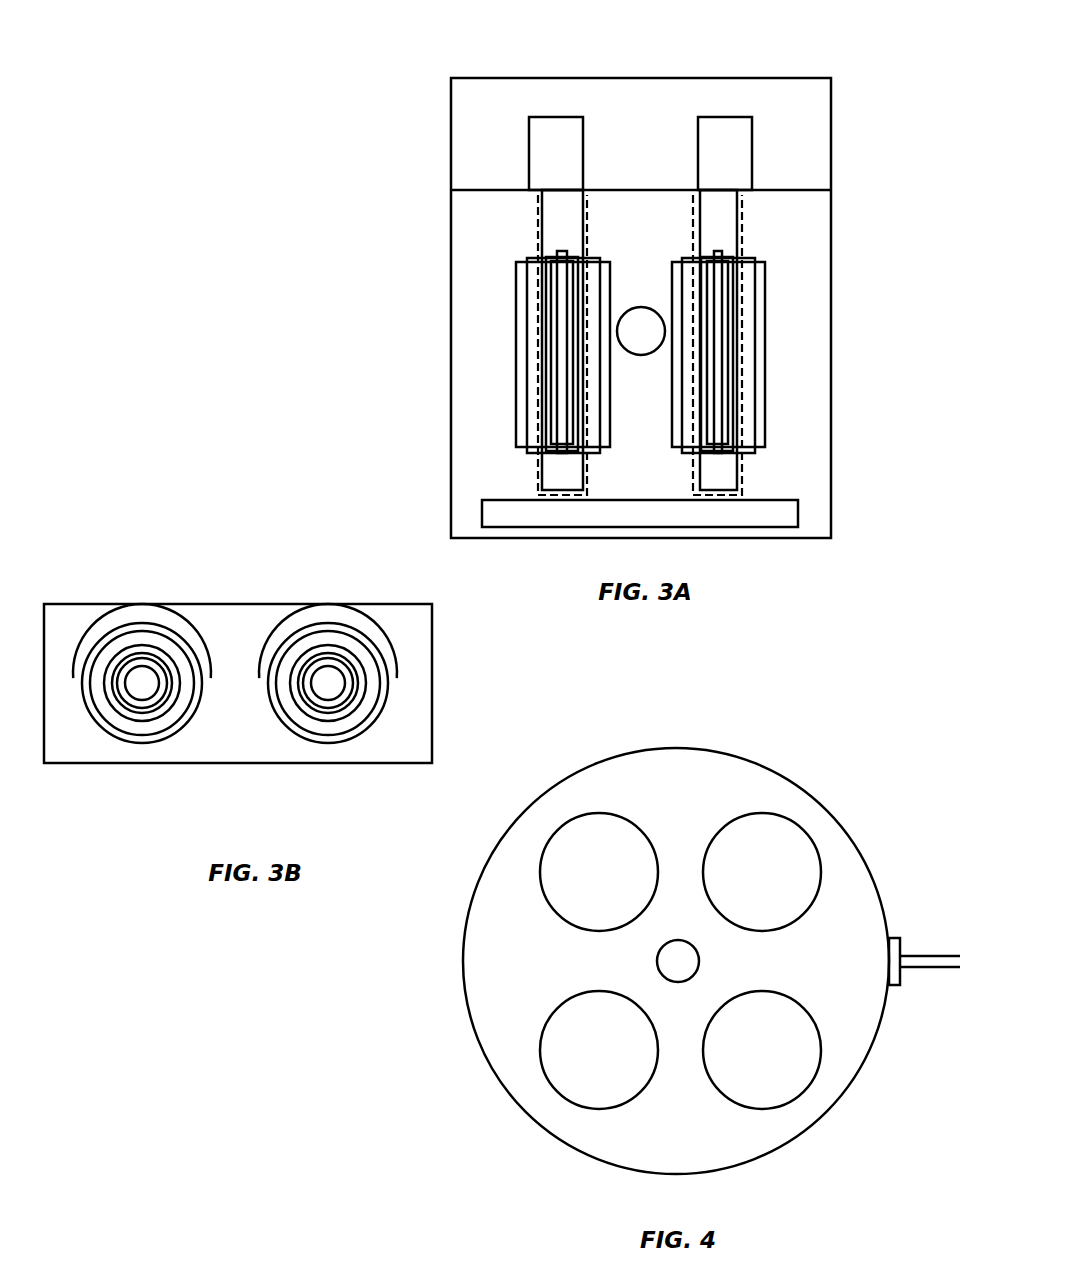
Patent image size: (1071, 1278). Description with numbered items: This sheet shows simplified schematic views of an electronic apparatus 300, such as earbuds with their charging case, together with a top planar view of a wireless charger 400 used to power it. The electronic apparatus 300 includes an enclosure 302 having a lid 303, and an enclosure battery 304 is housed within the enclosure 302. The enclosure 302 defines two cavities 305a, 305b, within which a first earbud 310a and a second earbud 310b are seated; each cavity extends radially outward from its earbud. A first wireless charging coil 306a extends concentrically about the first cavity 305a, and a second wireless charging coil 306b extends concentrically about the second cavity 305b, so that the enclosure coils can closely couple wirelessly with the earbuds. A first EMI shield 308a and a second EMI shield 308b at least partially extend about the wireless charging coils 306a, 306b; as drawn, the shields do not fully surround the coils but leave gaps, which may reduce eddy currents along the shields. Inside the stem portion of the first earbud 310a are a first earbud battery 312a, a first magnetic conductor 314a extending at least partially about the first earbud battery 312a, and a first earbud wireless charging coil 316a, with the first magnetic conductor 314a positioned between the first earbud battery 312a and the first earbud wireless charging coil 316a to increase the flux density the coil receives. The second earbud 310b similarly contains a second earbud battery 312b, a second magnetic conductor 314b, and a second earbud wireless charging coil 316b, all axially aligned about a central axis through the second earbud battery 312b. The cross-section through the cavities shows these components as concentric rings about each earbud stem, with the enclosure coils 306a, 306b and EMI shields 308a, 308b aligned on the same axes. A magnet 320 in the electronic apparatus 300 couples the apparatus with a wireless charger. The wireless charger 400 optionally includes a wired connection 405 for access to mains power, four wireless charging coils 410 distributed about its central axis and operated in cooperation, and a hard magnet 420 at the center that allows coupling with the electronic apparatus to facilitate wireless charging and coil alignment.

In FIG. 3A, the electronic apparatus 300 is at (350, 74).
In FIG. 3A, the enclosure 302 is at (832, 483).
In FIG. 3B, the enclosure 302 is at (433, 650).
In FIG. 3A, the lid 303 is at (450, 122).
In FIG. 3A, the enclosure battery 304 is at (482, 512).
In FIG. 3A, the first cavity 305a is at (537, 200).
In FIG. 3B, the first cavity 305a is at (183, 640).
In FIG. 3A, the second cavity 305b is at (743, 207).
In FIG. 3B, the second cavity 305b is at (369, 640).
In FIG. 3A, the first wireless charging coil 306a is at (527, 312).
In FIG. 3B, the first wireless charging coil 306a is at (147, 623).
In FIG. 3A, the second wireless charging coil 306b is at (755, 315).
In FIG. 3B, the second wireless charging coil 306b is at (333, 623).
In FIG. 3A, the first EMI shield 308a is at (517, 278).
In FIG. 3B, the first EMI shield 308a is at (102, 625).
In FIG. 3A, the second EMI shield 308b is at (765, 282).
In FIG. 3B, the second EMI shield 308b is at (288, 625).
In FIG. 3A, the first earbud 310a is at (560, 117).
In FIG. 3B, the first earbud 310a is at (175, 693).
In FIG. 3A, the second earbud 310b is at (727, 117).
In FIG. 3B, the second earbud 310b is at (361, 693).
In FIG. 3A, the first earbud battery 312a is at (558, 423).
In FIG. 3B, the first earbud battery 312a is at (122, 710).
In FIG. 3A, the second earbud battery 312b is at (720, 425).
In FIG. 3B, the second earbud battery 312b is at (308, 710).
In FIG. 3A, the first magnetic conductor 314a is at (552, 387).
In FIG. 3B, the first magnetic conductor 314a is at (150, 712).
In FIG. 3A, the second magnetic conductor 314b is at (728, 390).
In FIG. 3B, the second magnetic conductor 314b is at (336, 712).
In FIG. 3A, the first earbud wireless charging coil 316a is at (547, 352).
In FIG. 3B, the first earbud wireless charging coil 316a is at (158, 722).
In FIG. 3A, the second earbud wireless charging coil 316b is at (735, 357).
In FIG. 3B, the second earbud wireless charging coil 316b is at (344, 722).
In FIG. 3A, the magnet 320 is at (630, 310).
In FIG. 4, the wireless charger 400 is at (674, 726).
In FIG. 4, the wired connection 405 is at (895, 938).
In FIG. 4, the wireless charging coils 410 is at (625, 818).
In FIG. 4, the hard magnet 420 is at (698, 970).